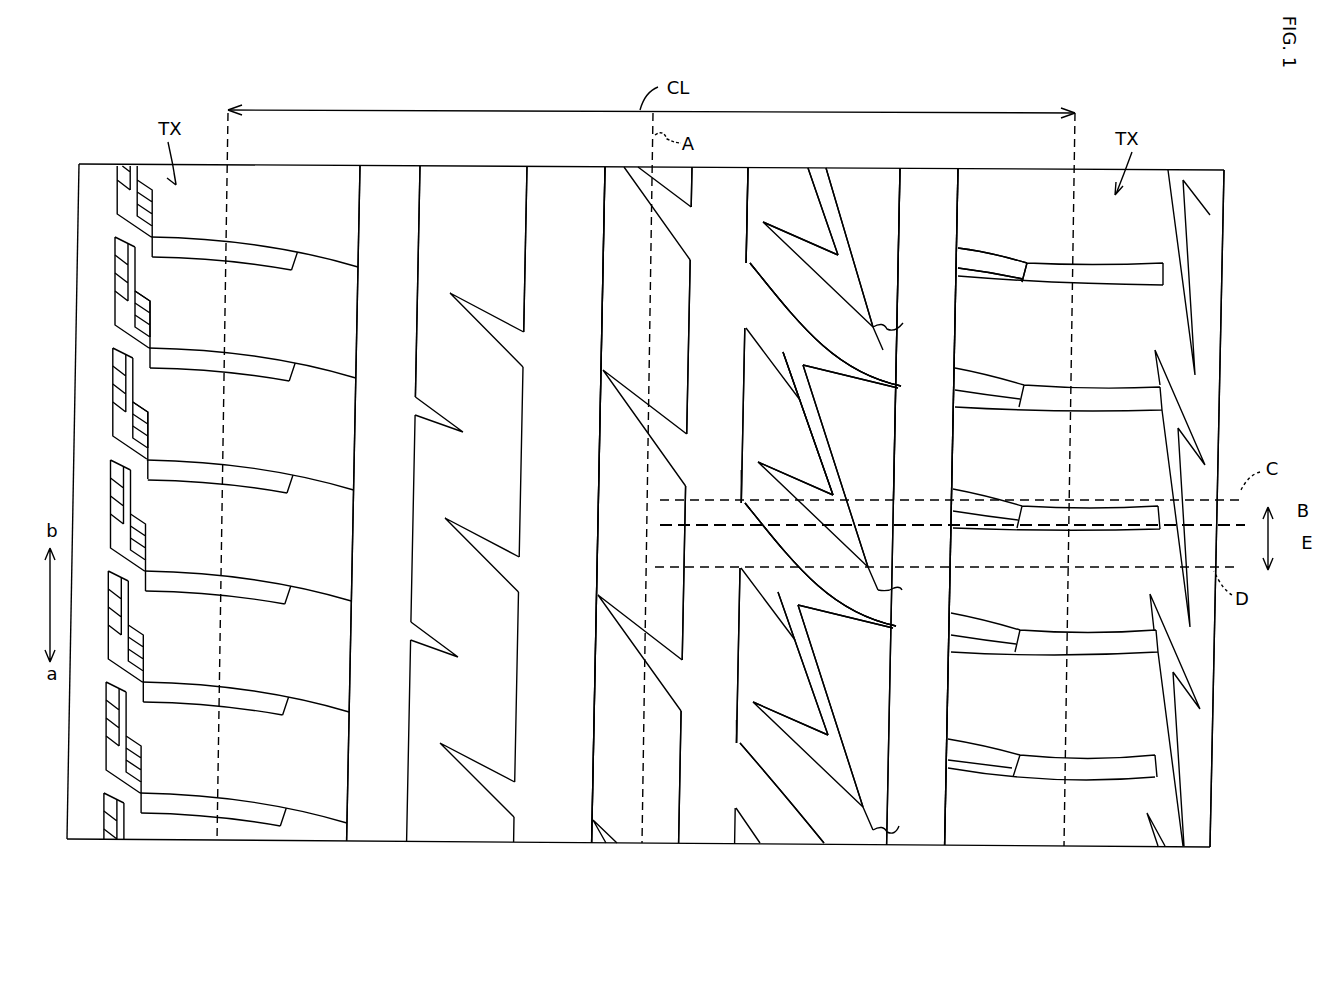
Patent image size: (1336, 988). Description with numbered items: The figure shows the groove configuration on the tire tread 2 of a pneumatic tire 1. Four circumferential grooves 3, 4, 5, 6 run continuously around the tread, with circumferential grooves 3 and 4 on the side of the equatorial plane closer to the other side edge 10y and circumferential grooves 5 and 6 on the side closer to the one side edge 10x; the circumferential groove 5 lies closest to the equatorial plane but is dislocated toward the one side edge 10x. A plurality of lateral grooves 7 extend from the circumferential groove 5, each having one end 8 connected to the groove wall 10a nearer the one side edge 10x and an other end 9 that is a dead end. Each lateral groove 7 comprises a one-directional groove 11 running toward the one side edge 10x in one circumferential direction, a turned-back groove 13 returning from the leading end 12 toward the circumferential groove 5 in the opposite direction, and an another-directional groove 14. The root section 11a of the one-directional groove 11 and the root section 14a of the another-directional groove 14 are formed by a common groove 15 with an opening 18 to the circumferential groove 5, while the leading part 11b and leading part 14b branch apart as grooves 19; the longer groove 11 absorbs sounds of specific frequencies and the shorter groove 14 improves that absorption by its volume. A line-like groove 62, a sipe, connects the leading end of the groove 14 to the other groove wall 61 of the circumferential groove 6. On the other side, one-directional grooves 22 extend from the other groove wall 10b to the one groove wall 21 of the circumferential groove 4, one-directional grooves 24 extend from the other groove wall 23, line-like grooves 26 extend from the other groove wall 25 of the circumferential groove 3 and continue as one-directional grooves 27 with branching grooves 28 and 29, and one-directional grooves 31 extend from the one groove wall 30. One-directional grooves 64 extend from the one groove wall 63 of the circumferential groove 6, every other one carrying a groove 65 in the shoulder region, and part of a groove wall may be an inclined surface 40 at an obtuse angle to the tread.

The pneumatic tire 1 is at (1172, 164).
The tire tread 2 is at (992, 174).
The circumferential groove 3 is at (386, 830).
The circumferential groove 4 is at (550, 830).
The circumferential groove 5 is at (704, 830).
The circumferential groove 6 is at (902, 830).
The lateral groove 7 is at (855, 186).
The one end 8 is at (746, 262).
The other end 9 is at (764, 224).
The groove wall 10a is at (739, 444).
The other groove wall 10b is at (680, 332).
The one side edge 10x is at (1223, 360).
The other side edge 10y is at (74, 345).
The one-directional groove 11 is at (860, 450).
The root section 11a is at (760, 300).
The leading part 11b is at (812, 420).
The leading end 12 is at (902, 567).
The turned-back groove 13 is at (824, 271).
The another-directional groove 14 is at (819, 346).
The root section 14a is at (756, 348).
The leading part 14b is at (828, 378).
The common groove 15 is at (823, 444).
The opening 18 is at (744, 302).
The groove 19 is at (840, 490).
The one groove wall 21 is at (604, 348).
The one-directional groove 22 is at (612, 398).
The other groove wall 23 is at (526, 538).
The one-directional groove 24 is at (470, 297).
The other groove wall 25 is at (357, 348).
The line-like groove 26 is at (310, 276).
The one-directional groove 27 is at (250, 250).
The branching groove 28 is at (118, 199).
The branching groove 29 is at (154, 286).
The one groove wall 30 is at (418, 352).
The one-directional groove 31 is at (437, 412).
The inclined surface 40 is at (118, 253).
The other groove wall 61 is at (906, 230).
The line-like groove 62 is at (896, 370).
The one groove wall 63 is at (956, 444).
The one-directional groove 64 is at (1052, 254).
The groove 65 is at (1196, 266).